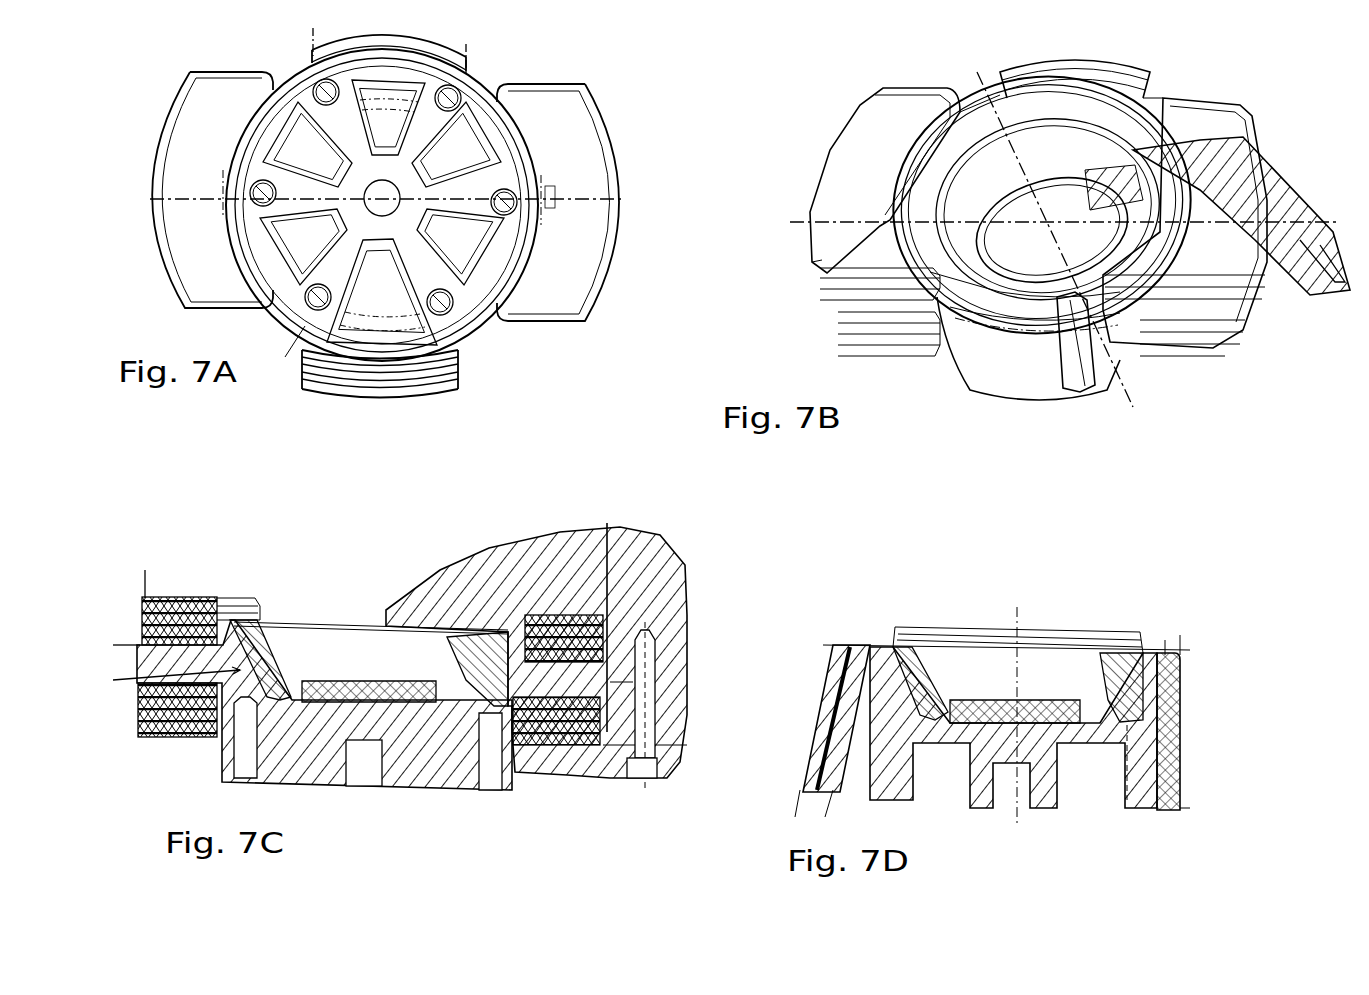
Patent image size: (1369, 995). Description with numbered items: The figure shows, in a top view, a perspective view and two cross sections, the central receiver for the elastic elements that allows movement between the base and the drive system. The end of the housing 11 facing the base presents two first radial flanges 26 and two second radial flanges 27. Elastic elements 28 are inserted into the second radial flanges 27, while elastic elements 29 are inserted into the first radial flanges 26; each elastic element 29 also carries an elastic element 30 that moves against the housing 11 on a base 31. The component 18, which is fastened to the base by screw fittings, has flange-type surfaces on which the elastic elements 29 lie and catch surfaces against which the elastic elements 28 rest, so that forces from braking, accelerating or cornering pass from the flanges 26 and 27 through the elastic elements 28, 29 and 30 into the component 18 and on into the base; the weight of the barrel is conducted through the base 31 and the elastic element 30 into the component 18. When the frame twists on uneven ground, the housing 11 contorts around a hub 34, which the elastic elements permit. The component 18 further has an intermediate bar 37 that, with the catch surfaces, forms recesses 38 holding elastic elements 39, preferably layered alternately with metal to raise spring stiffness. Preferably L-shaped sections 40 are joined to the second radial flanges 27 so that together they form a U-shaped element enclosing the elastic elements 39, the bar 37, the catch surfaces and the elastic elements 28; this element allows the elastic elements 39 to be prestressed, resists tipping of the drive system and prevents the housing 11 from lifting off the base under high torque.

In FIG. 7B, the housing 11 is at (1132, 232).
In FIG. 7C, the housing 11 is at (474, 595).
In FIG. 7C, the component 18 is at (138, 717).
In FIG. 7A, the first radial flange 26 is at (425, 400).
In FIG. 7B, the second radial flange 27 is at (1283, 187).
In FIG. 7C, the second radial flange 27 is at (610, 668).
In FIG. 7B, the elastic element 28 is at (959, 231).
In FIG. 7C, the elastic element 28 is at (273, 622).
In FIG. 7D, the elastic element 28 is at (917, 700).
In FIG. 7A, the elastic element 29 is at (331, 375).
In FIG. 7B, the elastic element 29 is at (1018, 383).
In FIG. 7D, the elastic element 29 is at (838, 648).
In FIG. 7B, the elastic element 30 is at (1027, 250).
In FIG. 7C, the elastic element 30 is at (344, 687).
In FIG. 7D, the elastic element 30 is at (998, 707).
In FIG. 7B, the base 31 is at (1085, 262).
In FIG. 7C, the base 31 is at (380, 630).
In FIG. 7C, the hub 34 is at (366, 770).
In FIG. 7C, the intermediate bar 37 is at (577, 678).
In FIG. 7C, the recess 38 is at (600, 625).
In FIG. 7A, the elastic element 39 is at (557, 295).
In FIG. 7B, the elastic element 39 is at (855, 145).
In FIG. 7C, the elastic element 39 is at (593, 720).
In FIG. 7B, the section 40 is at (1297, 282).
In FIG. 7C, the section 40 is at (647, 772).